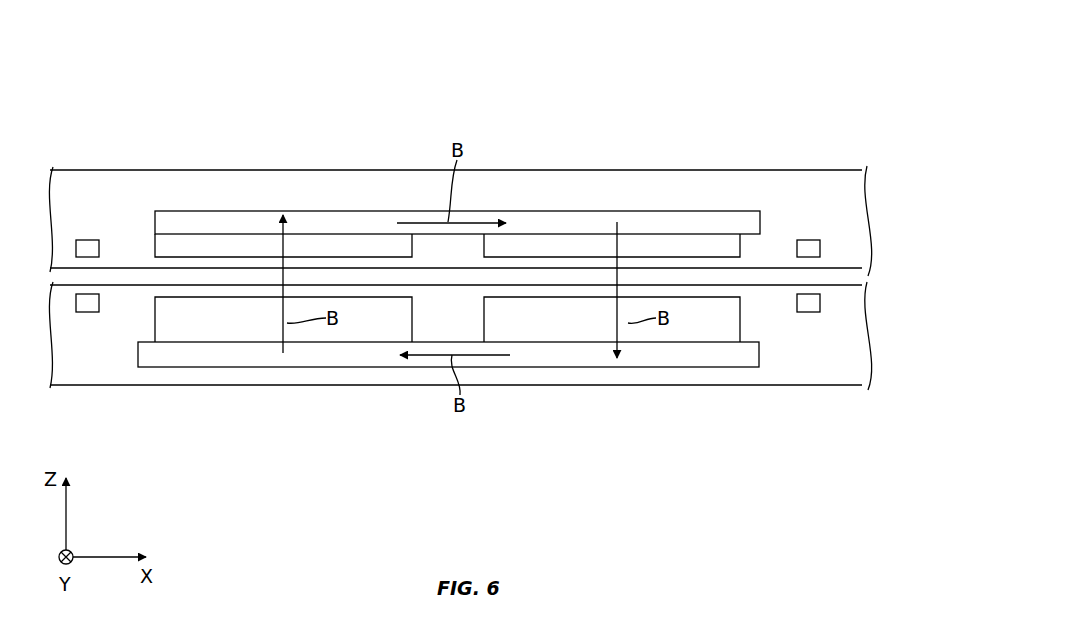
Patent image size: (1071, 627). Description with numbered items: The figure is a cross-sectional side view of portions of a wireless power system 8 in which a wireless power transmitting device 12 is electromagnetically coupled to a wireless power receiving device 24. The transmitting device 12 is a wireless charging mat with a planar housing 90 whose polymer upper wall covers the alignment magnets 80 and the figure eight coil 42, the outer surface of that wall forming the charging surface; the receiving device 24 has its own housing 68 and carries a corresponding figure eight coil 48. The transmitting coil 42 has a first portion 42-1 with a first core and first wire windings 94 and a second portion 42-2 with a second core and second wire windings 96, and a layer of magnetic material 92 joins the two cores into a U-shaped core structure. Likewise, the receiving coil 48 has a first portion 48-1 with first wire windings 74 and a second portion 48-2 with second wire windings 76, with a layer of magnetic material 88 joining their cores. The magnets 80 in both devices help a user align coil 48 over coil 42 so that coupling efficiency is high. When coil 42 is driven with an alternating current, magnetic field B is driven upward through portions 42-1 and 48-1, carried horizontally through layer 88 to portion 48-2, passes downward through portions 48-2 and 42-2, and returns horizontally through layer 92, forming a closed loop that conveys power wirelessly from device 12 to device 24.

The wireless power system 8 is at (814, 67).
The wireless power transmitting device 12 is at (893, 285).
The wireless power receiving device 24 is at (893, 171).
The figure eight coil 42 is at (119, 367).
The first portion of coil 42 42-1 is at (244, 409).
The second portion of coil 42 42-2 is at (692, 409).
The figure eight coil 48 is at (133, 189).
The first portion of coil 48 48-1 is at (244, 138).
The second portion of coil 48 48-2 is at (696, 138).
The housing 68 is at (70, 170).
The first wire windings 74 is at (152, 247).
The second wire windings 76 is at (753, 248).
The magnets 80 is at (87, 240).
The layer of magnetic material 88 is at (562, 222).
The housing 90 is at (125, 386).
The layer of magnetic material 92 is at (318, 361).
The first wire windings 94 is at (150, 320).
The second wire windings 96 is at (748, 321).